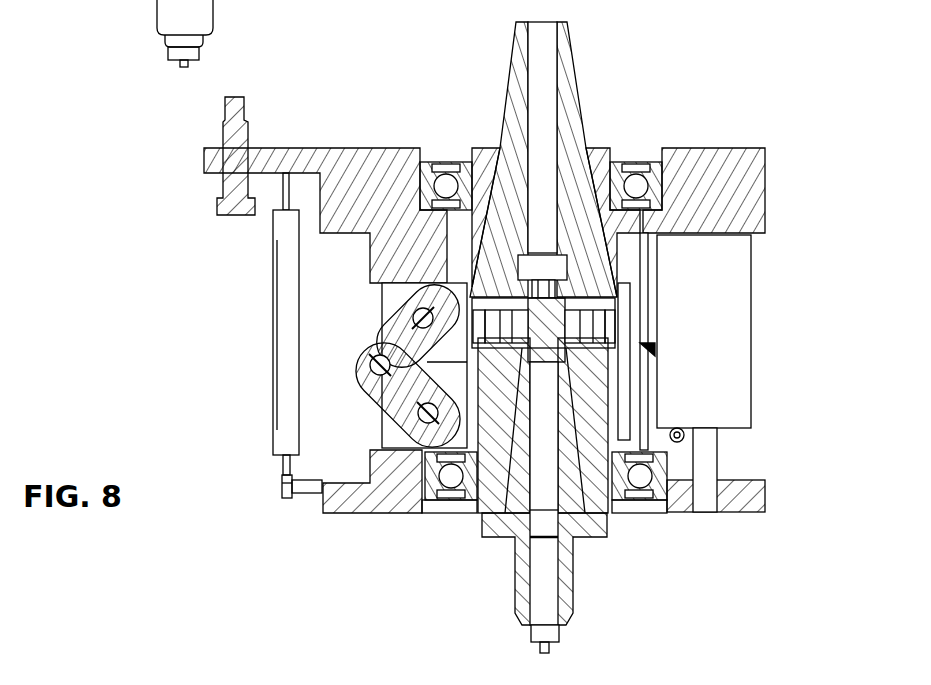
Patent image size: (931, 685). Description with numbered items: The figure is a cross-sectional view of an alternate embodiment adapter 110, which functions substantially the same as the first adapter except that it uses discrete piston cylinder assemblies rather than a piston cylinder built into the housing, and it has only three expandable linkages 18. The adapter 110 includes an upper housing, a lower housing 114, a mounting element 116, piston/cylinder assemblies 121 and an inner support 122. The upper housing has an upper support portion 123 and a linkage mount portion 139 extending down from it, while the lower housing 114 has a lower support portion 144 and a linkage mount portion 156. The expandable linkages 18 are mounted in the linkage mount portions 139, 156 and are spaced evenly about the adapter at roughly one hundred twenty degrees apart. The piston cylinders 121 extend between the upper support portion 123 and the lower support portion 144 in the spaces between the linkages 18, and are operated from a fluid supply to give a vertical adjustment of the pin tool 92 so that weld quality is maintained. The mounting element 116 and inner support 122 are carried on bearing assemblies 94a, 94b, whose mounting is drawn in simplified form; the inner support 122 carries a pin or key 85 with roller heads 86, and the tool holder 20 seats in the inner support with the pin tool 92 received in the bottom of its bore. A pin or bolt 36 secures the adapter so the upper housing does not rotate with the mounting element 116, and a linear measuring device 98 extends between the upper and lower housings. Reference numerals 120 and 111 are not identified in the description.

The expandable linkage 18 is at (318, 415).
The linkage mount portion 156 is at (124, 0).
The actuator cylinder 120 is at (192, 12).
The mounting element 116 is at (563, 61).
The adapter 110 is at (667, 55).
The upper housing 111 is at (733, 138).
The upper support portion 123 is at (757, 181).
The bearing assembly 94a is at (445, 183).
The pin or bolt 36 is at (237, 145).
The linear measuring device 98 is at (283, 333).
The linkage mount portion 139 is at (393, 286).
The pin or key 85 is at (593, 332).
The piston/cylinder assembly 121 is at (722, 308).
The roller head 86 is at (610, 348).
The lower support portion 144 is at (740, 492).
The bearing assembly 94b is at (643, 493).
The tool holder 20 is at (563, 557).
The pin tool 92 is at (560, 633).
The inner support 122 is at (480, 502).
The lower housing 114 is at (322, 538).